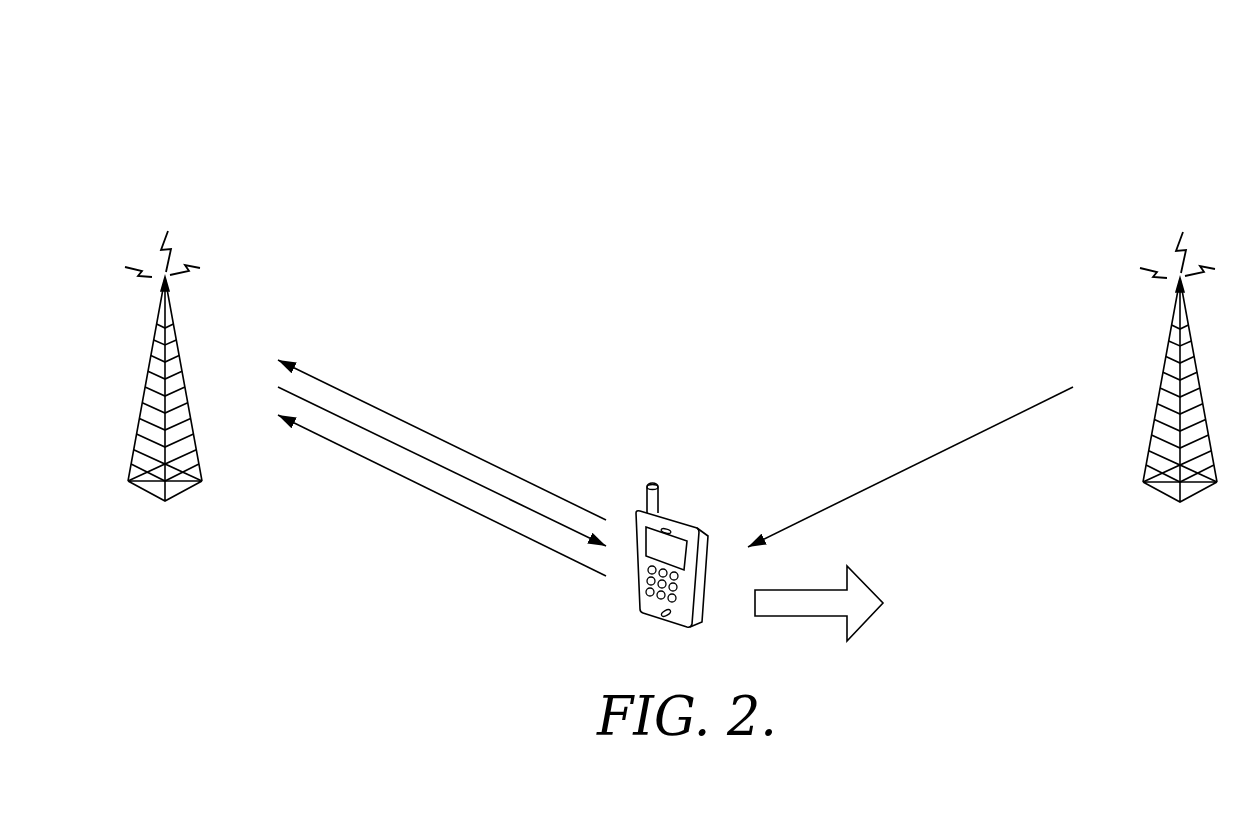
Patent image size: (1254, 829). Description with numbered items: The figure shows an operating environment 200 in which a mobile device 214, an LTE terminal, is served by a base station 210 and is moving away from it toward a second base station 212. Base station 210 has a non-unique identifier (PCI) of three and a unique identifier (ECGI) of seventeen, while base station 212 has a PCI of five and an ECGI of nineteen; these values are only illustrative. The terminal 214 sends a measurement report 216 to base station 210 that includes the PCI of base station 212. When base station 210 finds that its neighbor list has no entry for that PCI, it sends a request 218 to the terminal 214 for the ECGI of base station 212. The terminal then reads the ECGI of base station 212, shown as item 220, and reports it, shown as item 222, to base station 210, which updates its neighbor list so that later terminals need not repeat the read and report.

The operating environment 200 is at (370, 87).
The base station 210 is at (145, 385).
The base station 212 is at (1198, 385).
The mobile device 214 is at (665, 628).
The measurement report 216 is at (405, 478).
The request 218 is at (480, 490).
The reading of ECGI 220 is at (938, 452).
The report of ECGI 222 is at (407, 422).